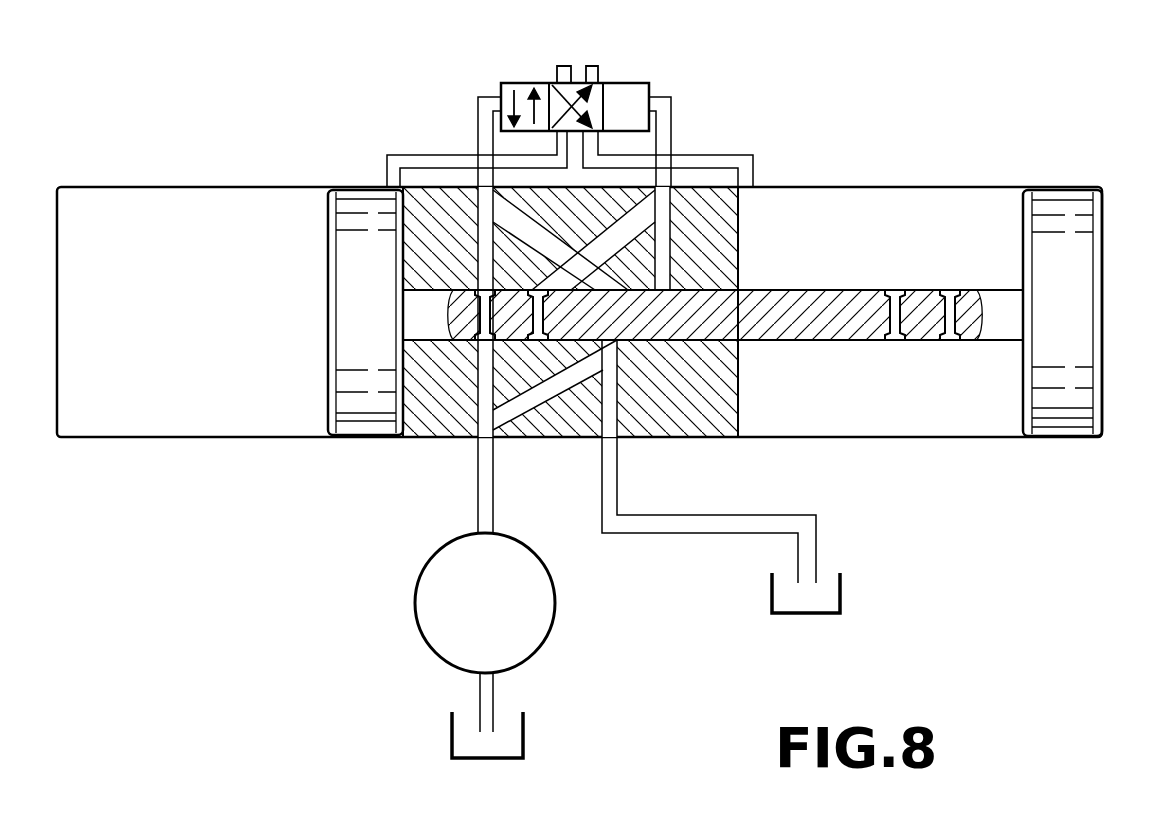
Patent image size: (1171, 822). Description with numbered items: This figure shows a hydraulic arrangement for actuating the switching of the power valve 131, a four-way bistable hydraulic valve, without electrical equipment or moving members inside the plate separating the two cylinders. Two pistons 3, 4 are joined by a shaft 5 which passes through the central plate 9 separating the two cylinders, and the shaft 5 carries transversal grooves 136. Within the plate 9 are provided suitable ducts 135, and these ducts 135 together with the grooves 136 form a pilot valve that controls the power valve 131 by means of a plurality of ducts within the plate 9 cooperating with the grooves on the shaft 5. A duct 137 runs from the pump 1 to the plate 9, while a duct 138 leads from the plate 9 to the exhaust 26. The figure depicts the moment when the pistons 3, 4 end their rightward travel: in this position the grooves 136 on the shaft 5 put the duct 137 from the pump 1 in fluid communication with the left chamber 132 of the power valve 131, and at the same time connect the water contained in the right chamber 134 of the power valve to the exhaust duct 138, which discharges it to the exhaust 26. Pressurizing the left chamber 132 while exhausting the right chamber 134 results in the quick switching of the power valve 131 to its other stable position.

The pump 1 is at (437, 603).
The piston 3 is at (347, 292).
The piston 4 is at (1067, 285).
The shaft 5 is at (623, 311).
The central plate 9 is at (609, 345).
The exhaust 26 is at (825, 597).
The power valve 131 is at (581, 94).
The left chamber 132 is at (500, 92).
The right chamber 134 is at (630, 112).
The ducts 135 is at (635, 354).
The grooves 136 is at (540, 313).
The duct 137 is at (487, 497).
The exhaust duct 138 is at (648, 525).